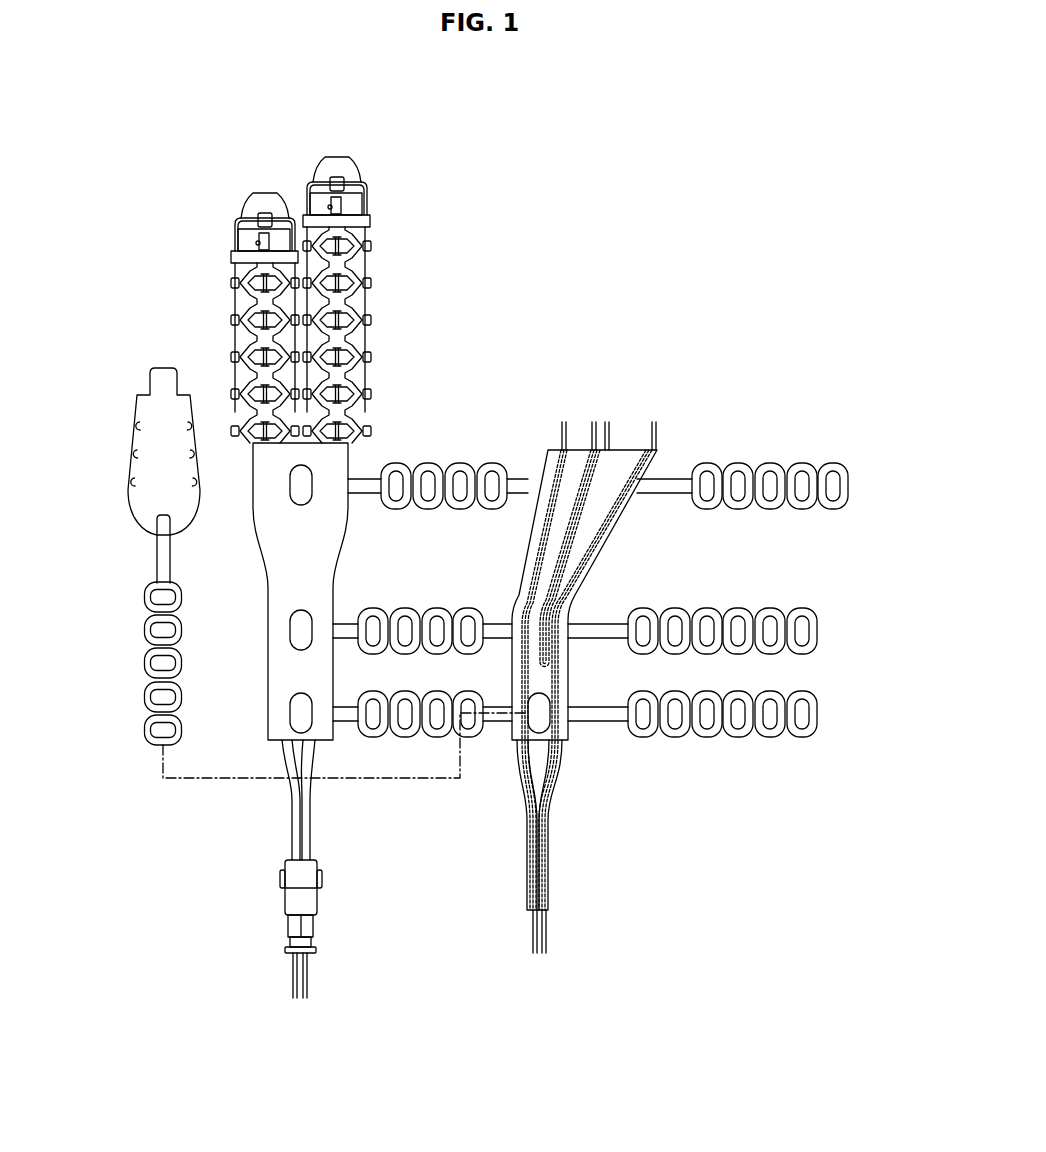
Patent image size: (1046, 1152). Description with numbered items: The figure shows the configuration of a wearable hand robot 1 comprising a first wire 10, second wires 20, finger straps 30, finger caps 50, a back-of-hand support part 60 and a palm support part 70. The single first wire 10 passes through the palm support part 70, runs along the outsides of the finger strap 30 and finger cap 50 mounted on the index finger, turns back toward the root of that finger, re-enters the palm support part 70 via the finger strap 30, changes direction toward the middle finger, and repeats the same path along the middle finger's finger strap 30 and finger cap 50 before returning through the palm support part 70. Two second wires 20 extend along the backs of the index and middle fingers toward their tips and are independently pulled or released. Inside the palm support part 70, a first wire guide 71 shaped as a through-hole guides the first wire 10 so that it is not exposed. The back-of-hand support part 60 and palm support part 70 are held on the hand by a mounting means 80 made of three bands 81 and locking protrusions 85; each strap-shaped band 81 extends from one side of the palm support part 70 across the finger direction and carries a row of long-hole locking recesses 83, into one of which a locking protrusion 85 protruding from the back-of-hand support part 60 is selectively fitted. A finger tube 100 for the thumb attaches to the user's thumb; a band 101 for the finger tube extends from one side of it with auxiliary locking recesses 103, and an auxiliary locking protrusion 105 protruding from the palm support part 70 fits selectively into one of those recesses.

The wearable hand robot 1 is at (557, 150).
The first wire 10 is at (234, 300).
The second wire 20 is at (246, 279).
The finger strap 30 is at (243, 350).
The finger cap 50 is at (248, 190).
The back-of-hand support part 60 is at (262, 587).
The palm support part 70 is at (592, 680).
The first wire guide 71 is at (585, 555).
The mounting means 80 is at (385, 445).
The band 81 is at (432, 508).
The locking recess 83 is at (460, 468).
The locking protrusion 85 is at (313, 488).
The finger tube for a thumb 100 is at (128, 435).
The band for the finger tube 101 is at (127, 630).
The auxiliary locking recess 103 is at (150, 659).
The auxiliary locking protrusion 105 is at (545, 718).